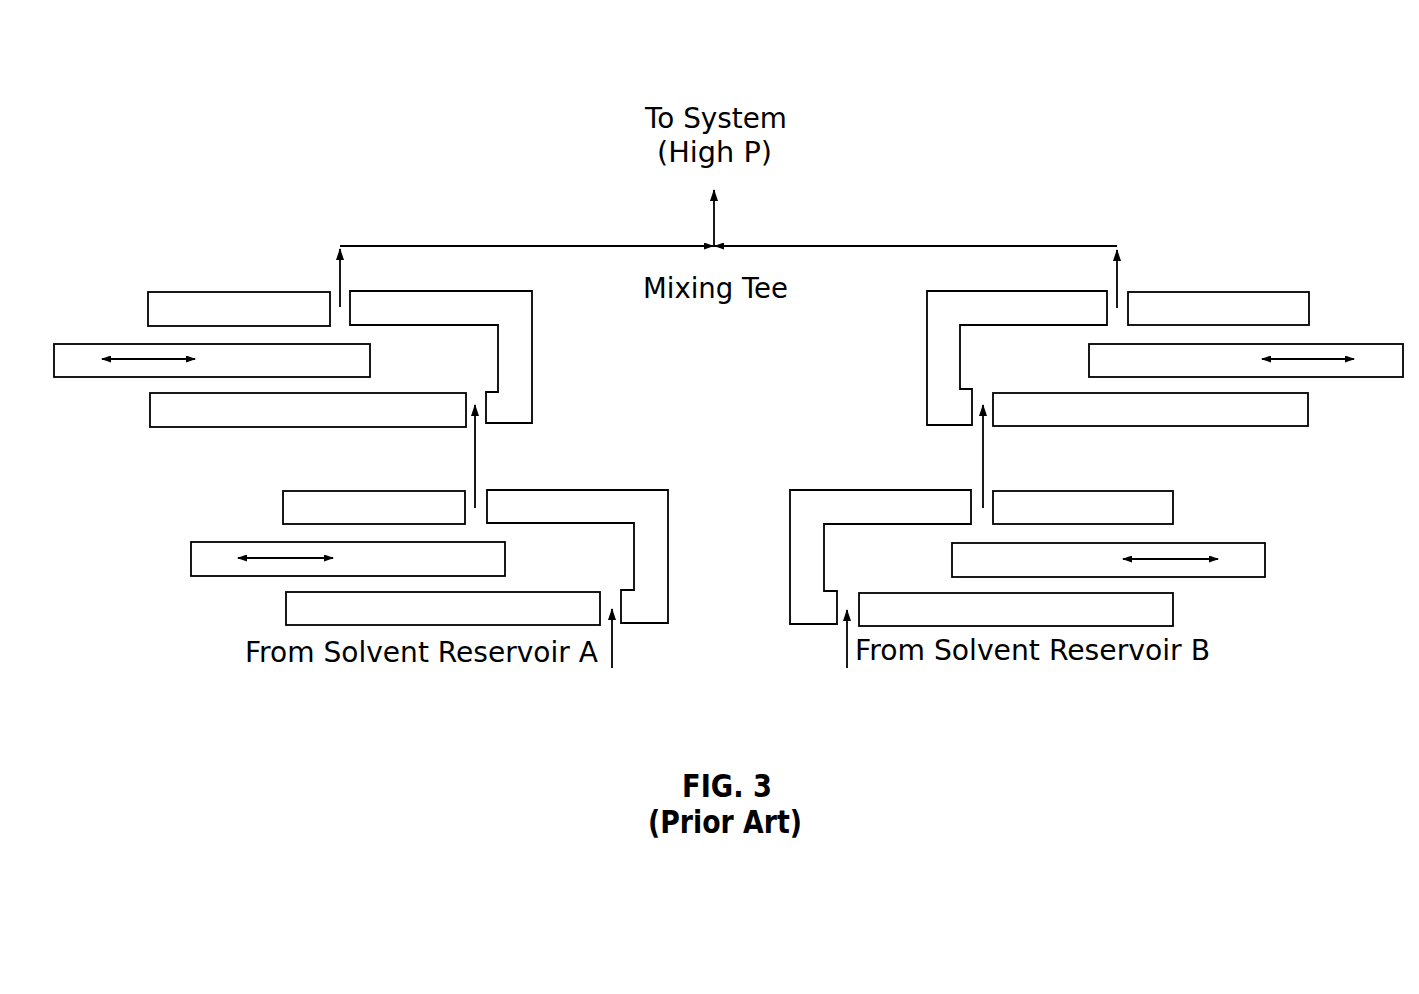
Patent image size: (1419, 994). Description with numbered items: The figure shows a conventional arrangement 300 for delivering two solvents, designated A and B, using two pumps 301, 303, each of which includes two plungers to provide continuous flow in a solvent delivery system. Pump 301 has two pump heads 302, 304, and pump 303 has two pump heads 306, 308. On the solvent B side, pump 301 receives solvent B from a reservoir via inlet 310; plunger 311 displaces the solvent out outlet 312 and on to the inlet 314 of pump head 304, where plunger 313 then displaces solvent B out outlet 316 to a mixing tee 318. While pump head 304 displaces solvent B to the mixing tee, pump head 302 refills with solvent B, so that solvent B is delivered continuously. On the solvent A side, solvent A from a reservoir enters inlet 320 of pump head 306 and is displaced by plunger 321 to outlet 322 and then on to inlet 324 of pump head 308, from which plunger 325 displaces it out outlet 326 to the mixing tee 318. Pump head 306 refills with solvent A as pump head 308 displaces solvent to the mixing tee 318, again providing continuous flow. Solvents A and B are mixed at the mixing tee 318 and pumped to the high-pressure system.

The conventional arrangement 300 is at (198, 66).
The pump 301 is at (1277, 428).
The pump head 302 is at (789, 511).
The pump 303 is at (192, 428).
The pump head 304 is at (925, 357).
The pump head 306 is at (652, 552).
The pump head 308 is at (533, 357).
The inlet 310 is at (840, 625).
The plunger 311 is at (1268, 560).
The outlet 312 is at (988, 493).
The plunger 313 is at (1372, 342).
The inlet 314 is at (987, 420).
The outlet 316 is at (1123, 290).
The mixing tee 318 is at (713, 305).
The inlet 320 is at (618, 625).
The plunger 321 is at (215, 541).
The outlet 322 is at (482, 492).
The inlet 324 is at (482, 420).
The plunger 325 is at (83, 343).
The outlet 326 is at (345, 292).